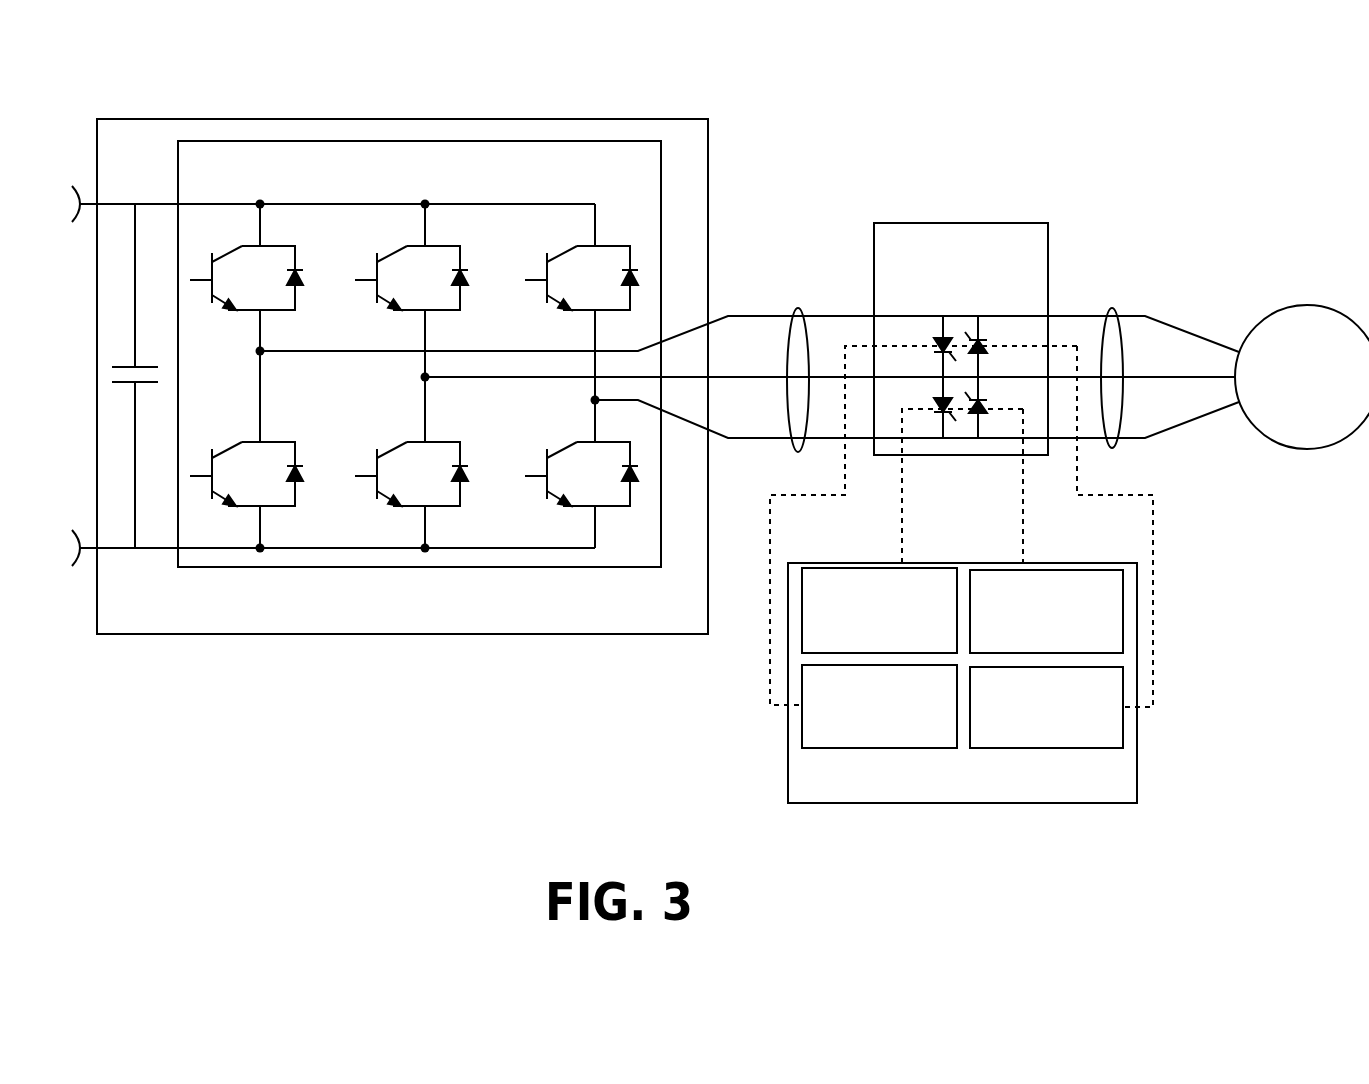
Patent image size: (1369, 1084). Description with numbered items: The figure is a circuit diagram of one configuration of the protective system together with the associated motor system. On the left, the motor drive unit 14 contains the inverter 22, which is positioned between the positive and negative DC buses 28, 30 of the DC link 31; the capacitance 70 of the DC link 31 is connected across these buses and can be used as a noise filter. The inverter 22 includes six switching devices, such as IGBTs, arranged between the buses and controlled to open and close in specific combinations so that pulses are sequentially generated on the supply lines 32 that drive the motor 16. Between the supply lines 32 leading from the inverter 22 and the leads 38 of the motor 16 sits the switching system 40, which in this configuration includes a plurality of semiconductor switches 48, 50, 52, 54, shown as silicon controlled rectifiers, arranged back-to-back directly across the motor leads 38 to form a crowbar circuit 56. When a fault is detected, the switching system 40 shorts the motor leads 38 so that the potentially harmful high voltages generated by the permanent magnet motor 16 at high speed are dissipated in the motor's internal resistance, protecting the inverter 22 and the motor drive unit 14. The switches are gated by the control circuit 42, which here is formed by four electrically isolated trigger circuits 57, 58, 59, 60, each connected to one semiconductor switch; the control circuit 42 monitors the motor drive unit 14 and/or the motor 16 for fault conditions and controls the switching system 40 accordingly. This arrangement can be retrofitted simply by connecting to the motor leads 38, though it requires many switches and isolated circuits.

The motor drive unit 14 is at (413, 634).
The motor 16 is at (1293, 405).
The inverter 22 is at (417, 141).
The positive DC bus 28 is at (113, 203).
The negative DC bus 30 is at (118, 550).
The DC link 31 is at (80, 156).
The supply lines 32 is at (798, 308).
The motor leads 38 is at (1112, 308).
The switching system 40 is at (959, 329).
The control circuit 42 is at (961, 690).
The semiconductor switch 48 is at (938, 338).
The semiconductor switch 50 is at (983, 338).
The semiconductor switch 52 is at (940, 415).
The semiconductor switch 54 is at (980, 415).
The crowbar circuit 56 is at (881, 409).
The electrically isolated trigger circuit 57 is at (912, 568).
The electrically isolated trigger circuit 58 is at (1013, 568).
The electrically isolated trigger circuit 59 is at (802, 735).
The electrically isolated trigger circuit 60 is at (1123, 730).
The capacitance 70 is at (114, 405).